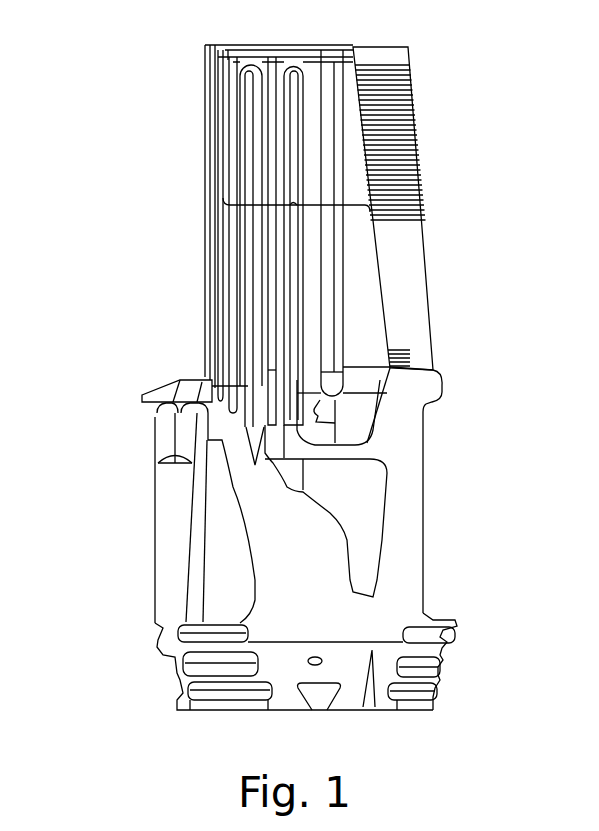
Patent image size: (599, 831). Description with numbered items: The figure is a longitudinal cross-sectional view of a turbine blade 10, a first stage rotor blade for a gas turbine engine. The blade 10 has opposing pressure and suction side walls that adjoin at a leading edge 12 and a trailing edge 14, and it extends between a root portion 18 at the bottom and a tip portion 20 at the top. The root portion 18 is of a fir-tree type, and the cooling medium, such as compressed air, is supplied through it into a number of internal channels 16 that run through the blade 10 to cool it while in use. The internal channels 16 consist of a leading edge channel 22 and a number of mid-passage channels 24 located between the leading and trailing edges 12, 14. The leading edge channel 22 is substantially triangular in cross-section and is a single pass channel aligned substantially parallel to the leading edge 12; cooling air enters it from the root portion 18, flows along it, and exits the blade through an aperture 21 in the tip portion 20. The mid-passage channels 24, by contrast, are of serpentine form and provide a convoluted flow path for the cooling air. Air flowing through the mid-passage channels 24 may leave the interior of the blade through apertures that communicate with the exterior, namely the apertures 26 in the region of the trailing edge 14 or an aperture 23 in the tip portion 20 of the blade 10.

The turbine blade 10 is at (128, 112).
The leading edge 12 is at (202, 338).
The trailing edge 14 is at (433, 340).
The internal channels 16 is at (263, 107).
The root portion 18 is at (362, 680).
The tip portion 20 is at (288, 50).
The aperture 21 is at (217, 50).
The leading edge channel 22 is at (218, 175).
The aperture 23 is at (230, 50).
The mid-passage channels 24 is at (293, 208).
The apertures 26 is at (405, 150).